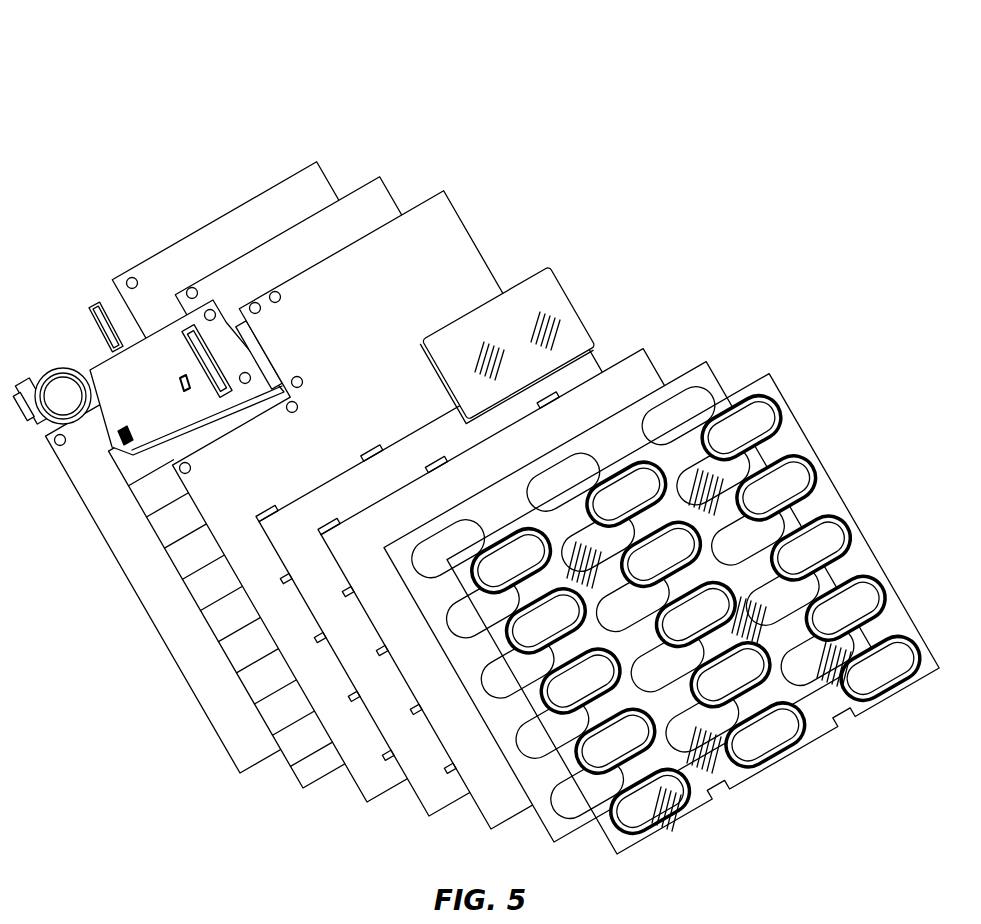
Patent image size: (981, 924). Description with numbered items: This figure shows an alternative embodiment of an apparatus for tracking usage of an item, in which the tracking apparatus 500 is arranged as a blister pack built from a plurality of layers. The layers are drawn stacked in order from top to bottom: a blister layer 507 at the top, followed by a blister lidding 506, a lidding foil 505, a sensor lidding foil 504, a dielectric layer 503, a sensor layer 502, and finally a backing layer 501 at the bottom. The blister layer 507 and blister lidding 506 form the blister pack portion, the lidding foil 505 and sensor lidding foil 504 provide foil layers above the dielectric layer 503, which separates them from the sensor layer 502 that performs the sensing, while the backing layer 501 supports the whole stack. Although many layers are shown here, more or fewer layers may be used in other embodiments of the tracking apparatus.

The tracking apparatus 500 is at (108, 96).
The backing layer 501 is at (303, 165).
The sensor layer 502 is at (368, 178).
The dielectric layer 503 is at (430, 192).
The sensor lidding foil 504 is at (578, 309).
The lidding foil 505 is at (652, 362).
The blister lidding 506 is at (715, 376).
The blister layer 507 is at (795, 416).